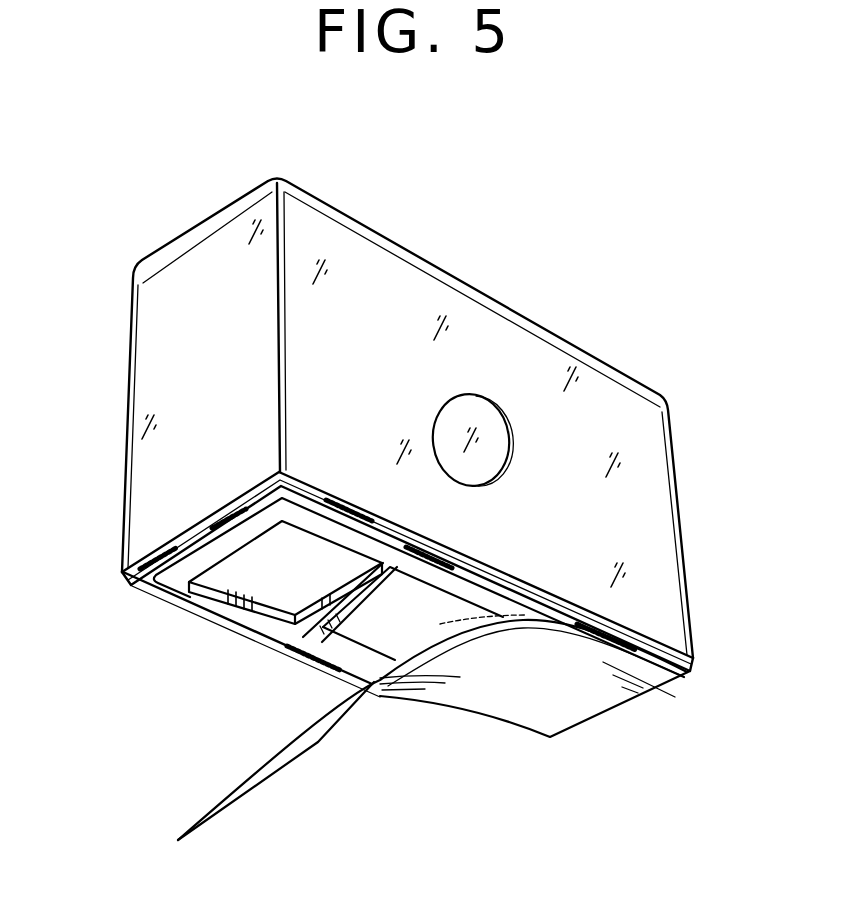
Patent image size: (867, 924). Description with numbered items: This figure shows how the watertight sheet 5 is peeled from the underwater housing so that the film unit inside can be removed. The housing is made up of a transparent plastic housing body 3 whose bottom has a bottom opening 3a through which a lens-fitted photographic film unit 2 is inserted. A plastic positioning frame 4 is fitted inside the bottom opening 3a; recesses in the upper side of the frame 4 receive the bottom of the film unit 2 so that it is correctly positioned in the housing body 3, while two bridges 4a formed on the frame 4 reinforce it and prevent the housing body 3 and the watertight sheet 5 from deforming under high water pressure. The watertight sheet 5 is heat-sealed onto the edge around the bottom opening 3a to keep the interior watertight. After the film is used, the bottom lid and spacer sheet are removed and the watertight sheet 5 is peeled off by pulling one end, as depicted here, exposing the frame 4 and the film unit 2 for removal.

The lens-fitted photographic film unit 2 is at (243, 566).
The housing body 3 is at (687, 499).
The bottom opening 3a is at (178, 587).
The positioning frame 4 is at (256, 616).
The bridges 4a is at (355, 598).
The watertight sheet 5 is at (252, 792).